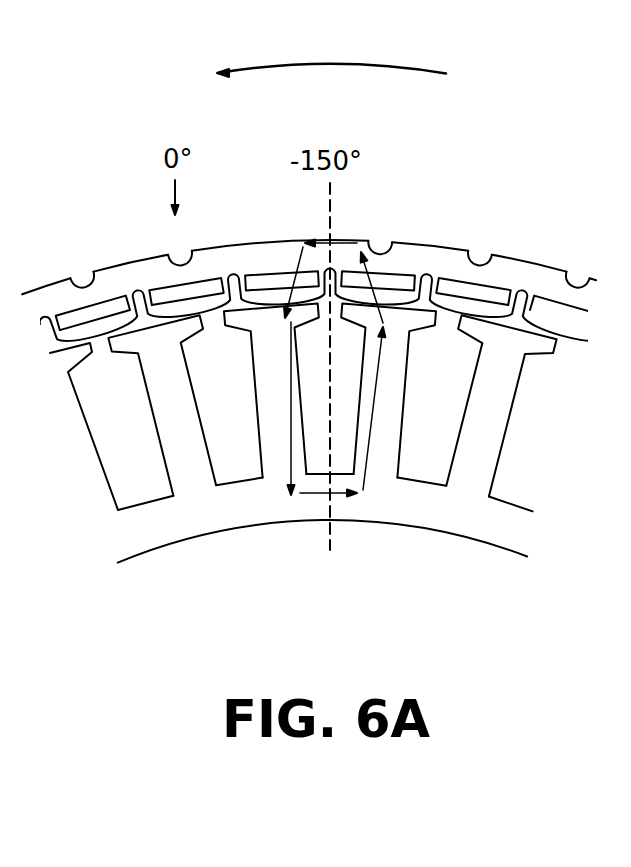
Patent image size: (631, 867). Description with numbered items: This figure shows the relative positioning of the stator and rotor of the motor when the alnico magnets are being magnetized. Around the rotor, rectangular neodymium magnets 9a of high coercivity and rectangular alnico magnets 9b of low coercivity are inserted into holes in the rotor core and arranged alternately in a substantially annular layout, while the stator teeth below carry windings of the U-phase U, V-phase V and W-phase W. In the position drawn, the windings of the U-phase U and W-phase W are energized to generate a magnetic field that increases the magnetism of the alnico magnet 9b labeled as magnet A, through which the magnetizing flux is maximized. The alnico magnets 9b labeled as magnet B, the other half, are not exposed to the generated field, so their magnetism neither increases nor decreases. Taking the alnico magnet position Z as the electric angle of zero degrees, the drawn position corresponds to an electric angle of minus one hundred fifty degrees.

The neodymium magnet 9a is at (263, 277).
The alnico magnet 9b is at (398, 268).
The U-phase winding U is at (271, 391).
The V-phase winding V is at (332, 405).
The W-phase winding W is at (243, 407).
The magnet A is at (380, 234).
The magnet B is at (580, 267).
The alnico magnet position Z is at (180, 244).